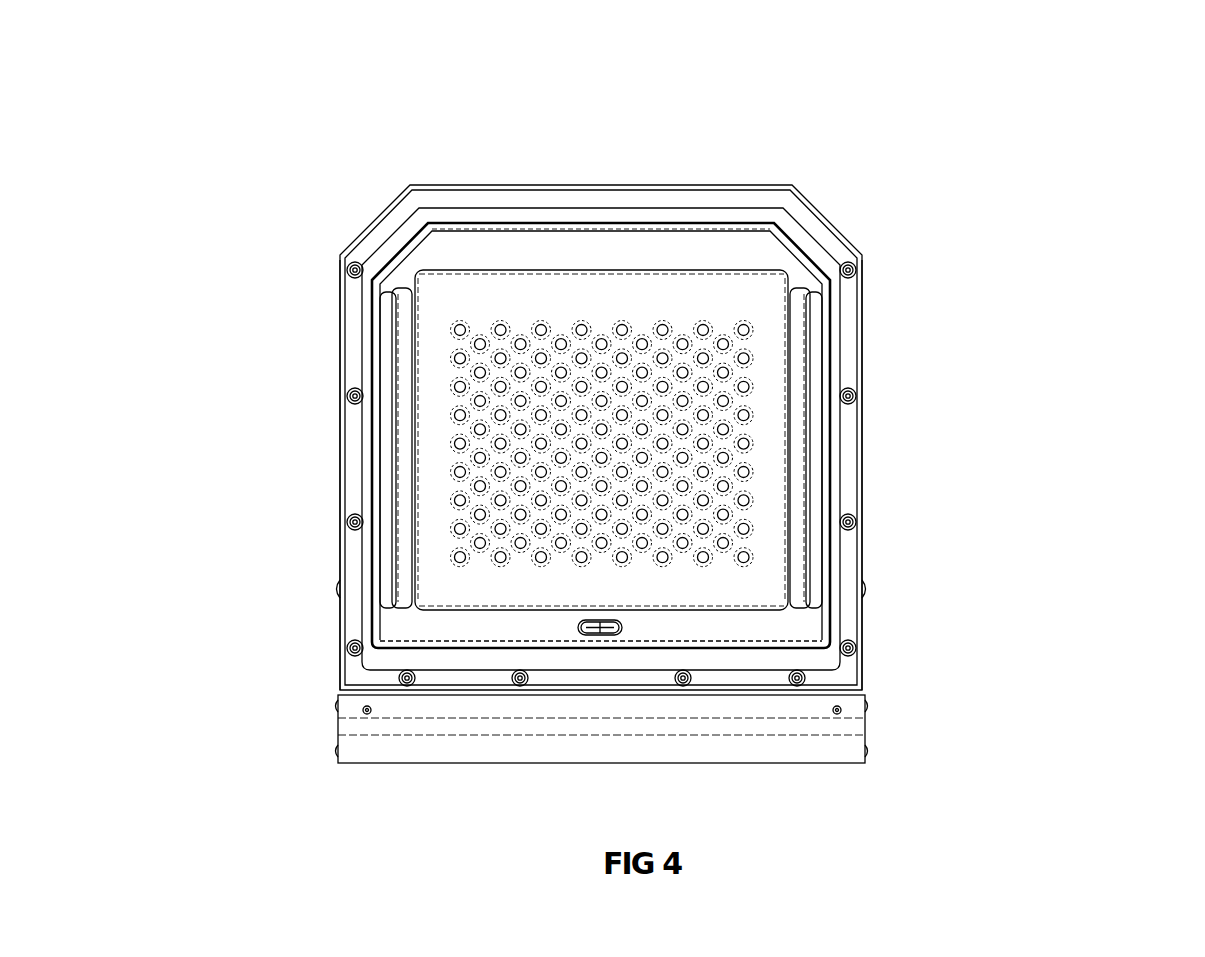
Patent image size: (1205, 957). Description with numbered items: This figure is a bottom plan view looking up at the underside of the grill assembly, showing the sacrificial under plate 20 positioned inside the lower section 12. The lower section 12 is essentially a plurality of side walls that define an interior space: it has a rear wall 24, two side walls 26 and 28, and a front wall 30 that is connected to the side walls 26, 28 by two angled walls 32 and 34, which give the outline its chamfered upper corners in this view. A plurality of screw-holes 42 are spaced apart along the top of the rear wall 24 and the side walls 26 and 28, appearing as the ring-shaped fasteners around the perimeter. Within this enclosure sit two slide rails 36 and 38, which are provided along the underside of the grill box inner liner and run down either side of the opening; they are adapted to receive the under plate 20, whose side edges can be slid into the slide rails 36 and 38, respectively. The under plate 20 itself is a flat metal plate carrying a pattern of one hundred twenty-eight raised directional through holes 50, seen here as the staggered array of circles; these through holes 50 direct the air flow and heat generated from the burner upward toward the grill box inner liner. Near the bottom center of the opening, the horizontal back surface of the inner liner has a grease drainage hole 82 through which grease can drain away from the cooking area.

The lower section 12 is at (720, 185).
The sacrificial under plate 20 is at (638, 322).
The rear wall 24 is at (550, 695).
The side wall 26 is at (342, 535).
The side wall 28 is at (863, 450).
The front wall 30 is at (645, 183).
The angled wall 32 is at (370, 226).
The angled wall 34 is at (840, 232).
The slide rail 36 is at (397, 528).
The slide rail 38 is at (812, 590).
The screw-holes 42 is at (858, 273).
The raised directional through holes 50 is at (706, 328).
The grease drainage hole 82 is at (615, 635).